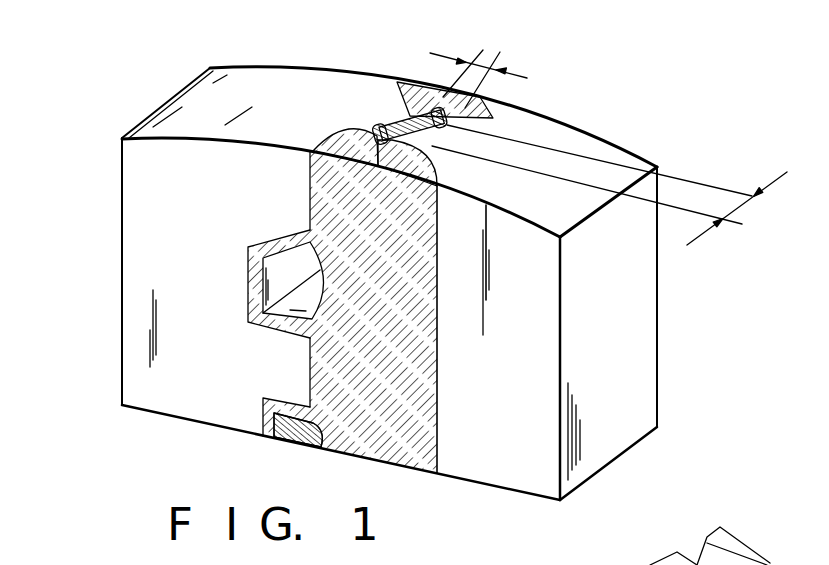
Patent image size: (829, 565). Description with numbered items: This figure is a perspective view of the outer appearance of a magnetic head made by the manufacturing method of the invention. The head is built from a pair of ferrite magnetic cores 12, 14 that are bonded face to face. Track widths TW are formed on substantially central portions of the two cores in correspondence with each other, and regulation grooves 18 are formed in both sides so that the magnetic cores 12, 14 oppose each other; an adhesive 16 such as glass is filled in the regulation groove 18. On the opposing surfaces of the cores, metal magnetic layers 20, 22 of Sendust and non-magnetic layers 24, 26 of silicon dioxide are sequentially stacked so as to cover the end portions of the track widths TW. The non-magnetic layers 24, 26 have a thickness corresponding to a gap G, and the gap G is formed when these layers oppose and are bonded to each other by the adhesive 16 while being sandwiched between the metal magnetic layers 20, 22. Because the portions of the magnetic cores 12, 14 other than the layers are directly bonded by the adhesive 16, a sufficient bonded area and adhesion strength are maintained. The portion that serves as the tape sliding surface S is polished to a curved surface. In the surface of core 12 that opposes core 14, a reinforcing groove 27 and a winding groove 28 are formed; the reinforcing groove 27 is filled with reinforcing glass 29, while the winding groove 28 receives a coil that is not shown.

The magnetic core 12 is at (143, 232).
The magnetic core 14 is at (640, 390).
The adhesive 16 is at (500, 100).
The regulation groove 18 is at (400, 94).
The metal magnetic layer 20 is at (390, 128).
The metal magnetic layer 22 is at (487, 140).
The non-magnetic layer 24 is at (311, 183).
The non-magnetic layer 26 is at (415, 170).
The reinforcing groove 27 is at (263, 421).
The winding groove 28 is at (248, 289).
The reinforcing glass 29 is at (293, 442).
The tape sliding surface S is at (287, 102).
The gap G is at (490, 51).
The track width TW is at (733, 212).